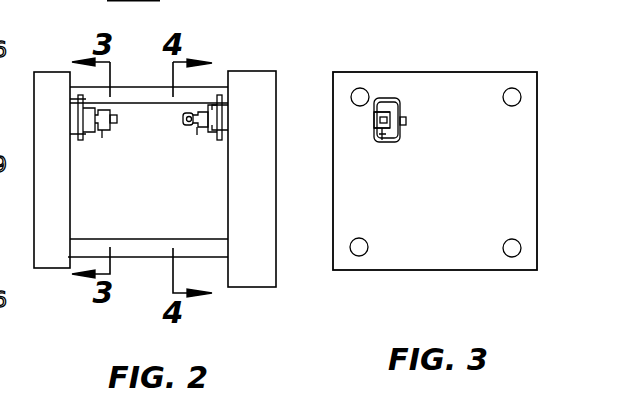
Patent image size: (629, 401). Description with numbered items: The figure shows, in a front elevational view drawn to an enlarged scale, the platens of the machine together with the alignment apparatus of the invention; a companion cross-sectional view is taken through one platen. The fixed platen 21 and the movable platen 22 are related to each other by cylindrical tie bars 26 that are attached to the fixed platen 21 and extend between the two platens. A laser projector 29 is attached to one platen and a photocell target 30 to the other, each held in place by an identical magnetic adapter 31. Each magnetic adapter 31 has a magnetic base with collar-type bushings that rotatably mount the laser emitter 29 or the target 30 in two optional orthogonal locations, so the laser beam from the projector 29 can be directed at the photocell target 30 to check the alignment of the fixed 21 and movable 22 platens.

In FIG. 2, the fixed platen 21 is at (277, 125).
In FIG. 2, the movable platen 22 is at (33, 125).
In FIG. 3, the movable platen 22 is at (475, 72).
In FIG. 2, the cylindrical tie bars 26 is at (162, 87).
In FIG. 3, the cylindrical tie bars 26 is at (355, 90).
In FIG. 2, the laser projector 29 is at (190, 127).
In FIG. 2, the photocell target 30 is at (104, 128).
In FIG. 3, the photocell target 30 is at (385, 133).
In FIG. 2, the magnetic adapter 31 is at (73, 105).
In FIG. 3, the magnetic adapter 31 is at (396, 98).